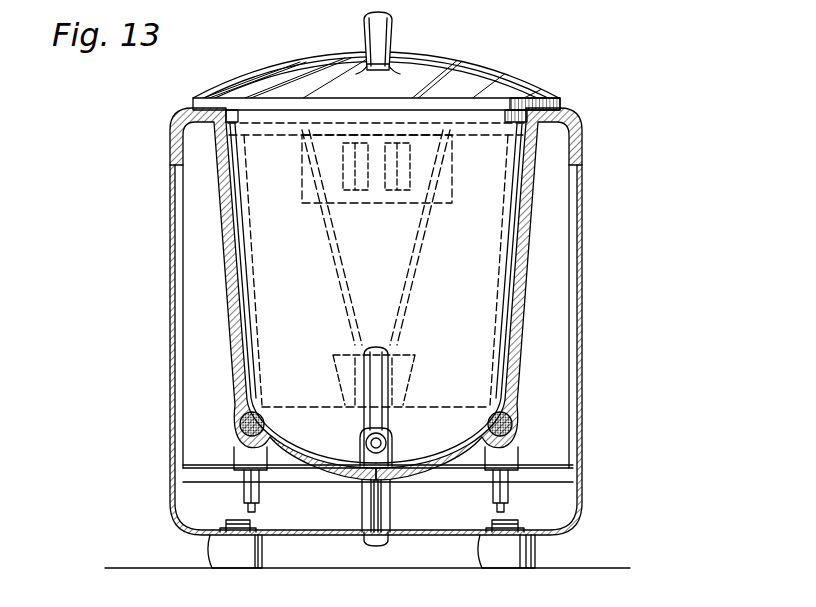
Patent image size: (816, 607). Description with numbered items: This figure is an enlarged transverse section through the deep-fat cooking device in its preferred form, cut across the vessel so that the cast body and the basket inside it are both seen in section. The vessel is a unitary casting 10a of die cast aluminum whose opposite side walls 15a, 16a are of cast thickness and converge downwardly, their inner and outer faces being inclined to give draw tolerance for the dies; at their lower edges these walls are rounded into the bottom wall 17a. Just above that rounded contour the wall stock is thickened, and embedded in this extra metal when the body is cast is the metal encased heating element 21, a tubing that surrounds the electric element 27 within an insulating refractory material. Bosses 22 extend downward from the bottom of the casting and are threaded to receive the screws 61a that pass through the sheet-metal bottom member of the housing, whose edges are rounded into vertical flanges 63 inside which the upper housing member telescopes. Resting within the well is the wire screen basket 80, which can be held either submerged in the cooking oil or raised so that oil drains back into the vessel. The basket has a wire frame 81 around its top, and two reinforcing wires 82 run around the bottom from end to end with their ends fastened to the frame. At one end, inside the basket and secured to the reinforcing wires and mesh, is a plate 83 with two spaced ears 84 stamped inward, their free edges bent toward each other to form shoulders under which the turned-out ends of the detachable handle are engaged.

The unitary casting 10a is at (522, 357).
The side wall 15a is at (530, 251).
The side wall 16a is at (220, 300).
The bottom wall 17a is at (428, 462).
The heating element 21 is at (238, 426).
The boss 22 is at (362, 512).
The electric element 27 is at (246, 510).
The screw 61a is at (582, 392).
The vertical flange 63 is at (580, 500).
The wire screen basket 80 is at (500, 305).
The wire frame 81 is at (240, 136).
The reinforcing wire 82 is at (332, 253).
The plate 83 is at (452, 180).
The ear 84 is at (400, 197).